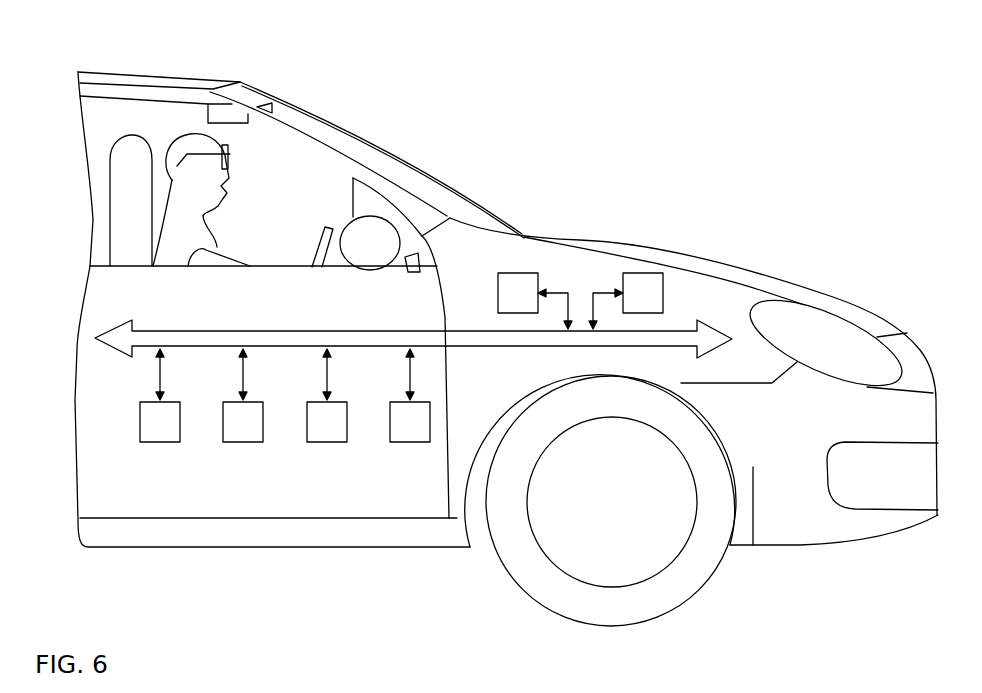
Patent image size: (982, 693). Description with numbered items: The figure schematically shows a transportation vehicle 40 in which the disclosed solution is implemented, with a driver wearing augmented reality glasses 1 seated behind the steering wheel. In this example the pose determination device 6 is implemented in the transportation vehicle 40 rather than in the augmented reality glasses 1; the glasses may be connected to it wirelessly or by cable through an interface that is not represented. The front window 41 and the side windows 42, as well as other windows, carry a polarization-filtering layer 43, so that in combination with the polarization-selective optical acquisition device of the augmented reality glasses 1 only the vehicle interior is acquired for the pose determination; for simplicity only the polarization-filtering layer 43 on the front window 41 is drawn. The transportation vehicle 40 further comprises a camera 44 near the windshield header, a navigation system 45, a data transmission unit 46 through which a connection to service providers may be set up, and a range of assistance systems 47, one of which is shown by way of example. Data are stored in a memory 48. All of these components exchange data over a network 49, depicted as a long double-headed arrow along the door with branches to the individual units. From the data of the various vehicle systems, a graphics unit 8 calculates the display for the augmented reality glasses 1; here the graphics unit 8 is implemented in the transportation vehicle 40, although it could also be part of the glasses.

The augmented reality glasses 1 is at (210, 150).
The pose determination device 6 is at (518, 275).
The graphics unit 8 is at (410, 442).
The transportation vehicle 40 is at (792, 283).
The front window 41 is at (425, 187).
The side windows 42 is at (282, 155).
The polarization-filtering layer 43 is at (495, 212).
The camera 44 is at (208, 113).
The navigation system 45 is at (160, 442).
The data transmission unit 46 is at (245, 442).
The assistance systems 47 is at (643, 275).
The memory 48 is at (327, 442).
The network 49 is at (113, 348).